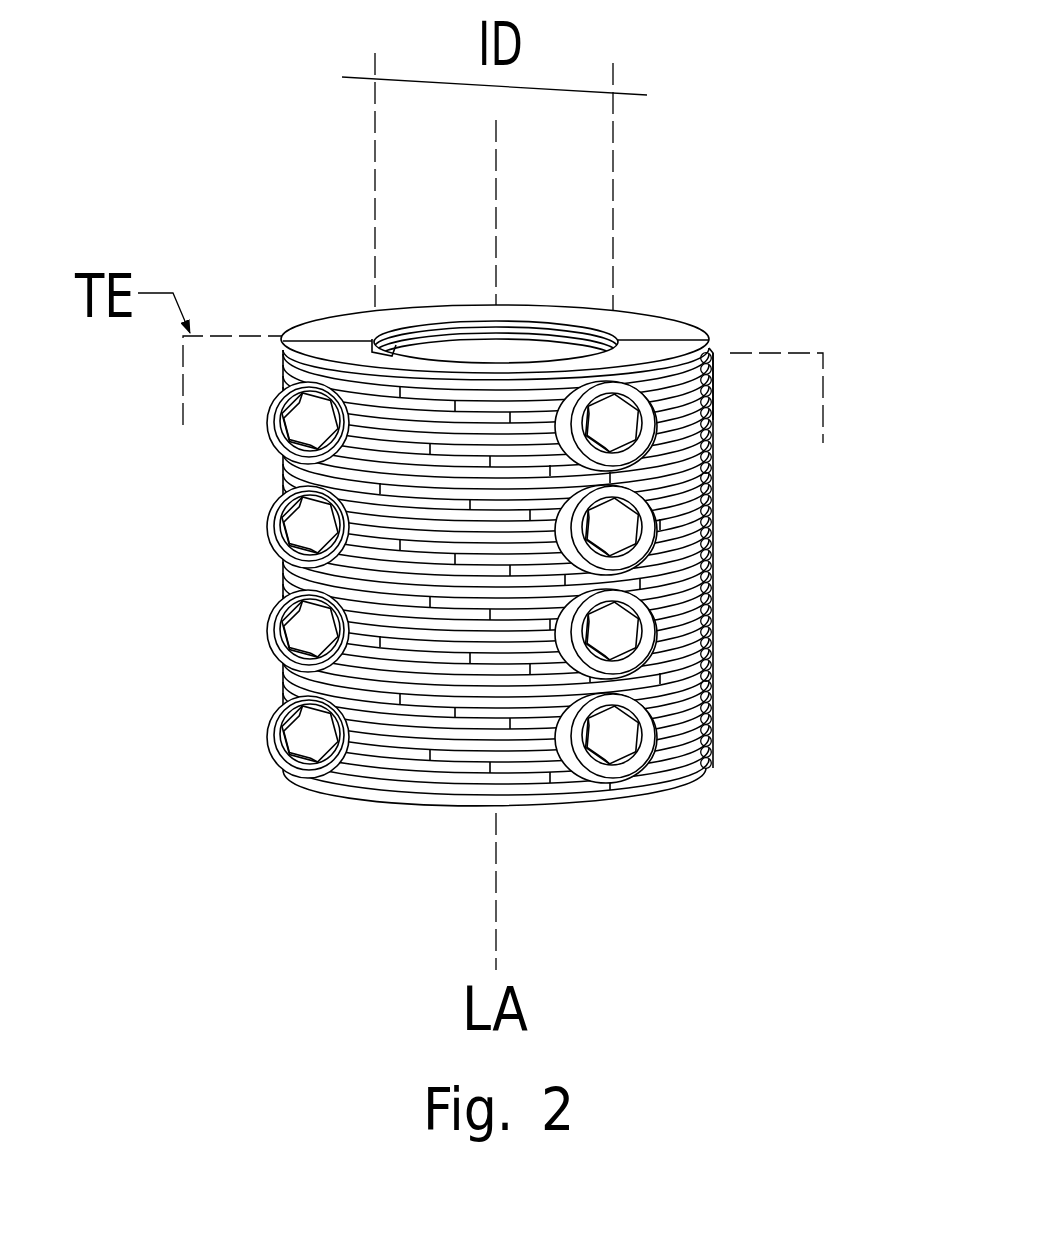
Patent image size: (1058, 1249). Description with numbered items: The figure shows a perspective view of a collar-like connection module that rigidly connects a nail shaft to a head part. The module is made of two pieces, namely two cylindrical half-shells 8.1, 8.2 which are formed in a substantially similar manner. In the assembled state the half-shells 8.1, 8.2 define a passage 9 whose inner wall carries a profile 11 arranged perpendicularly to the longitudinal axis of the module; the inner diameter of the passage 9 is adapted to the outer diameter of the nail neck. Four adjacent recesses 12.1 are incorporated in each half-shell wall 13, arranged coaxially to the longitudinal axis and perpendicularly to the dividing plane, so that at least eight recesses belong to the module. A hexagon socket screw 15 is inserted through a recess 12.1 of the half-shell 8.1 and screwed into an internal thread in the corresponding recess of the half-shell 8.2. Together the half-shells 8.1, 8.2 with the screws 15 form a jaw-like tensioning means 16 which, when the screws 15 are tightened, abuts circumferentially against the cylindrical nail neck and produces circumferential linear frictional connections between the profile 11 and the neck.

The half-shell 8.1 is at (700, 772).
The half-shell 8.2 is at (718, 362).
The passage 9 is at (565, 327).
The profile 11 is at (465, 347).
The recess 12.1 is at (706, 520).
The half-shell wall 13 is at (657, 318).
The hexagon socket screw 15 is at (600, 757).
The jaw-like tensioning means 16 is at (290, 722).